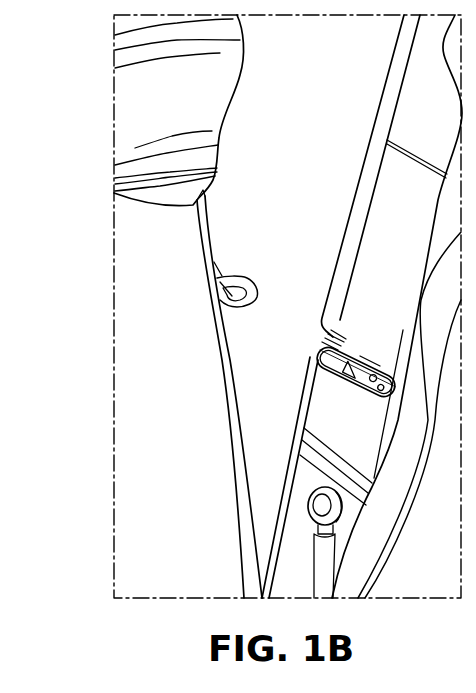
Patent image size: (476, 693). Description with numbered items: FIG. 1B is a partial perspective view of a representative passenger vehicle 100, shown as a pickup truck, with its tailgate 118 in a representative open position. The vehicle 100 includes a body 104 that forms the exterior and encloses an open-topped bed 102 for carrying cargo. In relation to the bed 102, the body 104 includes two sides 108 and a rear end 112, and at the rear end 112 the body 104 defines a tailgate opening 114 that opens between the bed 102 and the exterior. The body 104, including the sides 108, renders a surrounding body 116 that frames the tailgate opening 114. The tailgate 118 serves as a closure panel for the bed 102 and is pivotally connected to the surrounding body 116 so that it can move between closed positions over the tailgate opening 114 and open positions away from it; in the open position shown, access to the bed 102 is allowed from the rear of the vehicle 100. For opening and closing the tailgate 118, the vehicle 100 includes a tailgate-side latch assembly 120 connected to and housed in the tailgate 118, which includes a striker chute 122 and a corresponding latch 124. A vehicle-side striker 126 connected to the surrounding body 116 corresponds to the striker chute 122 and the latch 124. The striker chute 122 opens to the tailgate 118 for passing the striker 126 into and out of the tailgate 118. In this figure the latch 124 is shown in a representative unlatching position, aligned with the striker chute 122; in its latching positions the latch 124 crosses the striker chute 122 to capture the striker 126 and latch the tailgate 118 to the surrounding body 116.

The vehicle 100 is at (138, 110).
The body 104 is at (108, 97).
The bed 102 is at (158, 146).
The sides 108 is at (157, 174).
The rear end 112 is at (135, 194).
The tailgate opening 114 is at (224, 249).
The surrounding body 116 is at (214, 270).
The striker 126 is at (225, 286).
The tailgate 118 is at (383, 91).
The latch assembly 120 is at (317, 355).
The striker chute 122 is at (335, 346).
The latch 124 is at (372, 361).